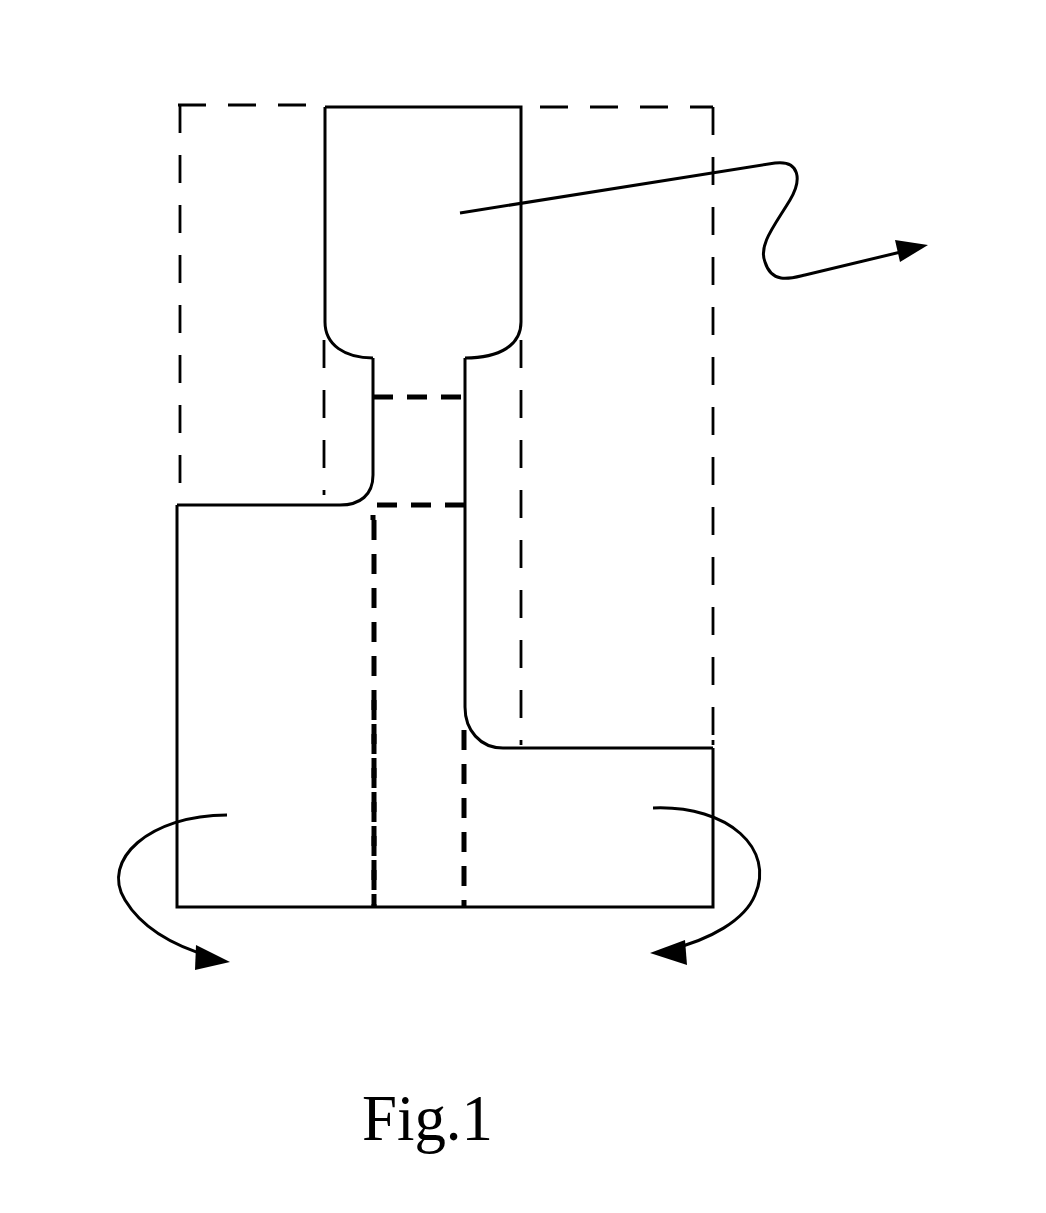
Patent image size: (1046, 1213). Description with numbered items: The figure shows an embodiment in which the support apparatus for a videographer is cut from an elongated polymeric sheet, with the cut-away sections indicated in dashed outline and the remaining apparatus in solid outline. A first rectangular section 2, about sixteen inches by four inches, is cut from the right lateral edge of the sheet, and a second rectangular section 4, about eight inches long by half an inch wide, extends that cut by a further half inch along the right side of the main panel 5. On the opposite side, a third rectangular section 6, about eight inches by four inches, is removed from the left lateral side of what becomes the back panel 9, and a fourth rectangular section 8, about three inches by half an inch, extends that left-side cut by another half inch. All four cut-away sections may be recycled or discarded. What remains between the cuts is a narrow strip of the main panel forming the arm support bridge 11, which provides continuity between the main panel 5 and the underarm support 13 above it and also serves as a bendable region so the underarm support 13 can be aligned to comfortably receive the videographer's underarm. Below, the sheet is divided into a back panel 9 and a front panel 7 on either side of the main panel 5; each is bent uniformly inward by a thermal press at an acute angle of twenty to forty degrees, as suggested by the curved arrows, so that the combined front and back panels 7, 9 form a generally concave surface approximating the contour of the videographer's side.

The first rectangular section 2 is at (613, 452).
The second rectangular section 4 is at (493, 648).
The main panel 5 is at (419, 803).
The third rectangular section 6 is at (250, 235).
The front panel 7 is at (566, 856).
The fourth rectangular section 8 is at (355, 450).
The back panel 9 is at (246, 737).
The arm support bridge 11 is at (321, 439).
The underarm support 13 is at (392, 155).